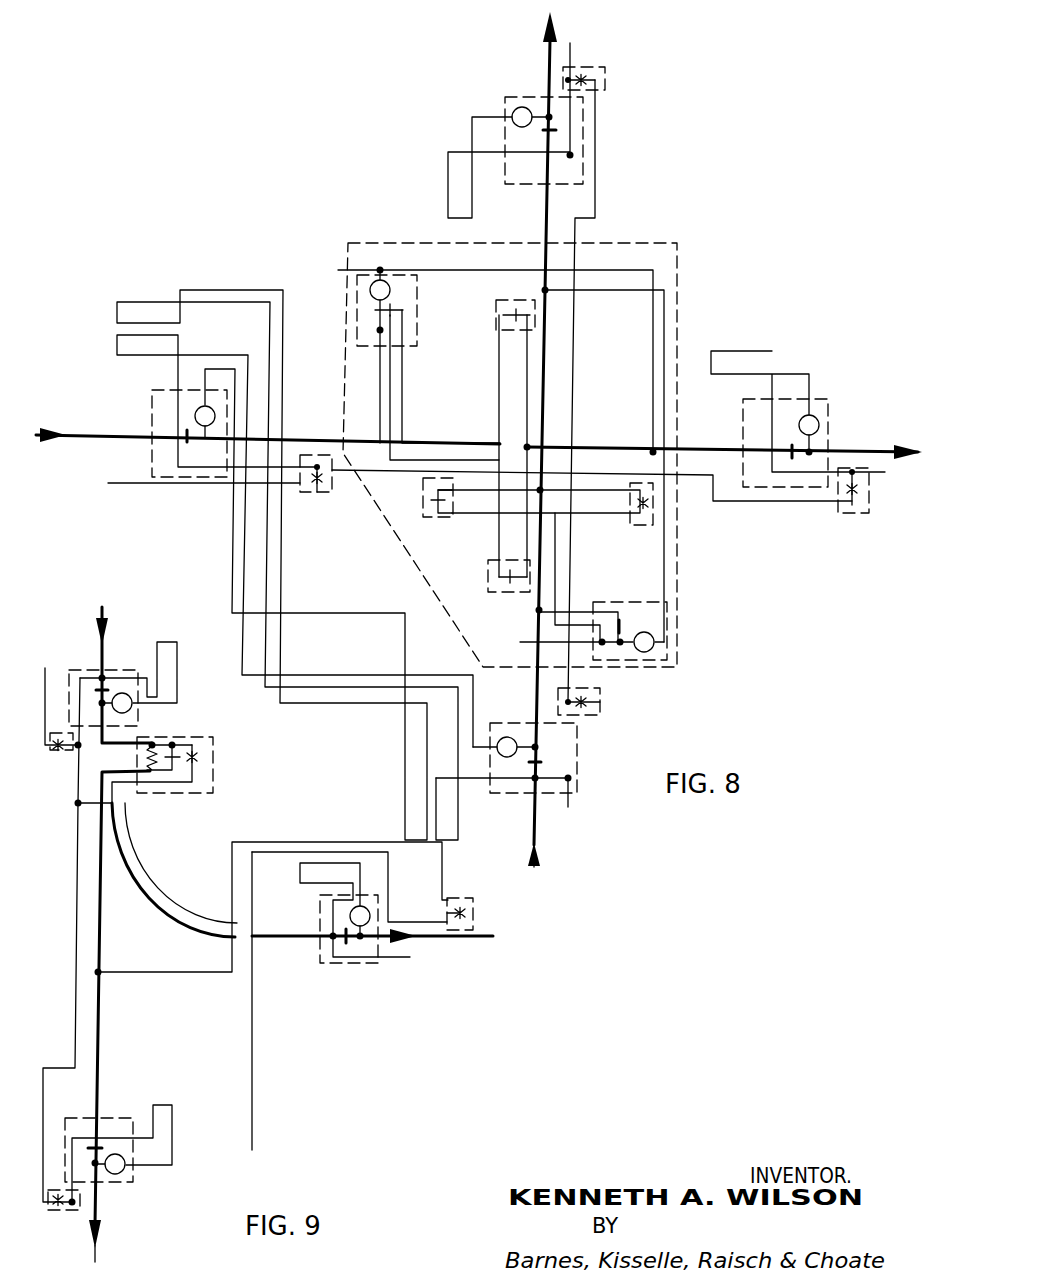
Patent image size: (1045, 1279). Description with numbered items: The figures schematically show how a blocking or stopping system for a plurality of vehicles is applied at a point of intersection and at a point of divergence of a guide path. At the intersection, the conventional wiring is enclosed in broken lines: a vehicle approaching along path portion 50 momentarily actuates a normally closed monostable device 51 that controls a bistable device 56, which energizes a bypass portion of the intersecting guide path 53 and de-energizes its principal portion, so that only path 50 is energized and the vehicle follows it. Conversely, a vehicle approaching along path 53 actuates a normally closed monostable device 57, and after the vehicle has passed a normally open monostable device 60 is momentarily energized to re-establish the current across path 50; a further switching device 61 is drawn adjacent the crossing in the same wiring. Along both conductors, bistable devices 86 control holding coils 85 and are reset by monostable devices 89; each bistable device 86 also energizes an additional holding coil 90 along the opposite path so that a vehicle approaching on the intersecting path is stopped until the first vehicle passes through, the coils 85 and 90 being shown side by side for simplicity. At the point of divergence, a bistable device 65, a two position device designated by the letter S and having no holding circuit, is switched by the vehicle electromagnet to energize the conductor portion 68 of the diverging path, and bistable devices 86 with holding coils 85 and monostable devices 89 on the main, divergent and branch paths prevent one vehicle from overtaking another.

In FIG. 8, the path portion 50 is at (118, 432).
In FIG. 8, the normally closed monostable device 51 is at (439, 518).
In FIG. 8, the intersecting guide path 53 is at (535, 690).
In FIG. 8, the bistable device 56 is at (660, 663).
In FIG. 8, the normally closed monostable device 57 is at (510, 592).
In FIG. 8, the normally open monostable device 60 is at (418, 337).
In FIG. 8, the valve 61 is at (504, 300).
In FIG. 9, the bistable device 65 is at (214, 781).
In FIG. 9, the conductor portion 68 is at (175, 920).
In FIG. 8, the holding coil 85 is at (450, 180).
In FIG. 9, the holding coil 85 is at (368, 876).
In FIG. 8, the bistable device 86 is at (510, 97).
In FIG. 9, the bistable device 86 is at (147, 1155).
In FIG. 8, the monostable device 89 is at (606, 72).
In FIG. 9, the monostable device 89 is at (63, 754).
In FIG. 8, the additional holding coil 90 is at (395, 800).
In FIG. 9, the bistable device designation S is at (214, 757).